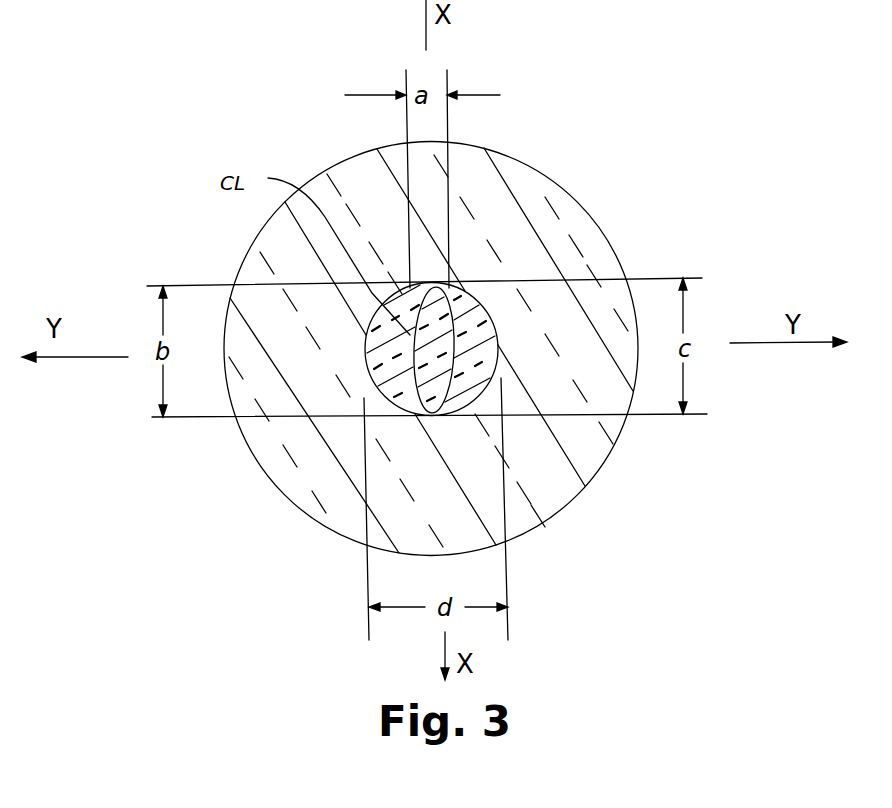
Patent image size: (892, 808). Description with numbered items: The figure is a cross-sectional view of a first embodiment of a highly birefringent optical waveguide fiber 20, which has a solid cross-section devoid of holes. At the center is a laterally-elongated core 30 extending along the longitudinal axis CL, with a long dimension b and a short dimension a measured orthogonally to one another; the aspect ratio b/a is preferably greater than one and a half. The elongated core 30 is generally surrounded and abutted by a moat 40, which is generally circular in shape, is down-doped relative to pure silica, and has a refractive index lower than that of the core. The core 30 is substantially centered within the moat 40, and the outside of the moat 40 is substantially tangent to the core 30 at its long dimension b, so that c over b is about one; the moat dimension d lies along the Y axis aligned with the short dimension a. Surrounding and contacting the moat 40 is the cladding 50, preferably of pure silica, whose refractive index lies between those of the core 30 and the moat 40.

The optical waveguide fiber 20 is at (612, 183).
The centermost laterally-elongated core 30 is at (445, 293).
The moat 40 is at (455, 392).
The cladding 50 is at (553, 487).